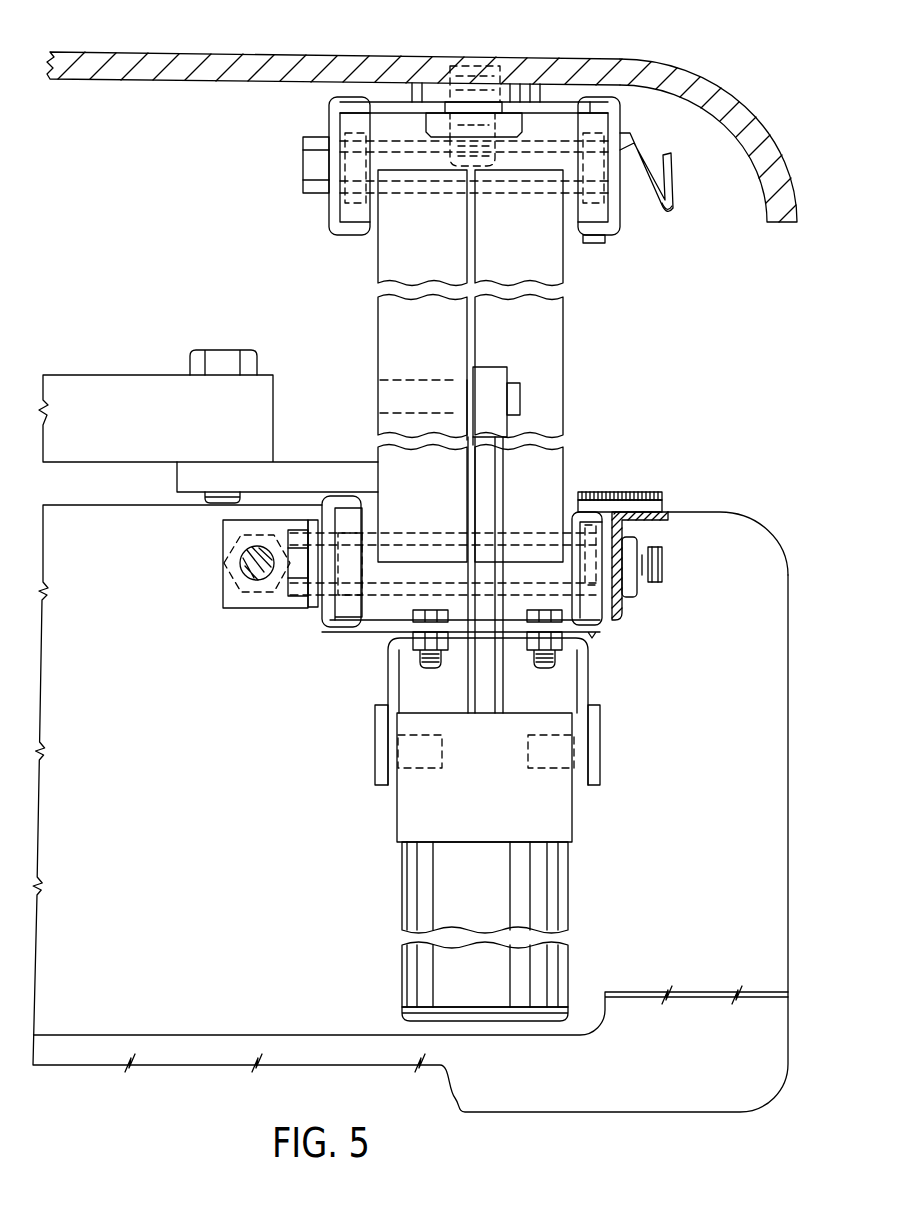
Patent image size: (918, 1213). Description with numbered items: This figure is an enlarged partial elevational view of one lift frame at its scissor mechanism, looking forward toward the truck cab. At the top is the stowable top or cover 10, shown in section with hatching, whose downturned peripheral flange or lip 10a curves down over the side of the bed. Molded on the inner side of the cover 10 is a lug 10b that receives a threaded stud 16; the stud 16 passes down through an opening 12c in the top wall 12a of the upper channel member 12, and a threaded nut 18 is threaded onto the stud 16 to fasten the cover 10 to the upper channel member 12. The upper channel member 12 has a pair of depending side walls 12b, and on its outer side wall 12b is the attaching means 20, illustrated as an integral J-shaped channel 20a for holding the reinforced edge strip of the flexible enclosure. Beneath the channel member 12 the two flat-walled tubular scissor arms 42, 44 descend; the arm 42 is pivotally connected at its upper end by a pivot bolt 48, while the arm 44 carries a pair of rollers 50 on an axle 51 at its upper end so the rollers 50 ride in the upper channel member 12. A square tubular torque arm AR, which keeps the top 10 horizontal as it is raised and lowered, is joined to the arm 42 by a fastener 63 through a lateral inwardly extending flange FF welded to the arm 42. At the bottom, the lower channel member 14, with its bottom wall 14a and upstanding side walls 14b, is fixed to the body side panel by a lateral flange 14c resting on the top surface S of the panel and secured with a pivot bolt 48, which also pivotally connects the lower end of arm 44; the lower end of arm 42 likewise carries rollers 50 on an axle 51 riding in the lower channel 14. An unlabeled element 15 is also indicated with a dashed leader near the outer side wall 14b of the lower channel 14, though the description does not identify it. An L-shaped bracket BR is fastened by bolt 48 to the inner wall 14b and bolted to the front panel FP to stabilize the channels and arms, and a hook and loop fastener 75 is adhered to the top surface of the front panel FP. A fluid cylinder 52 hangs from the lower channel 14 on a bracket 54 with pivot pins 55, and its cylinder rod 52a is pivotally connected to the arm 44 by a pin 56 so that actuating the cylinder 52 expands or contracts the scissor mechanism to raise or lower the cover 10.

The stowable top or cover 10 is at (153, 48).
The downturned peripheral flange or lip 10a is at (782, 150).
The lug 10b is at (440, 94).
The threaded stud 16 is at (516, 58).
The opening 12c is at (542, 100).
The top wall 12a is at (345, 110).
The upper channel member 12 is at (600, 246).
The side wall 12b is at (321, 216).
The roller 50 is at (597, 125).
The axle 51 is at (320, 122).
The pivot bolt 48 is at (300, 170).
The threaded nut 18 is at (503, 150).
The attaching means 20 is at (672, 164).
The J-shaped channel 20a is at (670, 197).
The scissor arm 42 is at (372, 325).
The scissor arm 44 is at (570, 330).
The pin 56 is at (372, 398).
The cylinder rod 52a is at (488, 425).
The fastener 63 is at (218, 360).
The torque arm AR is at (85, 395).
The flange FF is at (190, 477).
The lower channel member 14 is at (340, 492).
The bottom wall 14a is at (592, 660).
The side wall 14b is at (607, 623).
The lateral flange 14c is at (660, 512).
The hook and loop fastener 75 is at (622, 492).
The gap 15 is at (630, 603).
The L-shaped bracket BR is at (233, 595).
The top surface S is at (45, 505).
The front side panel FP is at (150, 660).
The bracket 54 is at (382, 694).
The pivot pin 55 is at (380, 750).
The fluid cylinder 52 is at (447, 985).